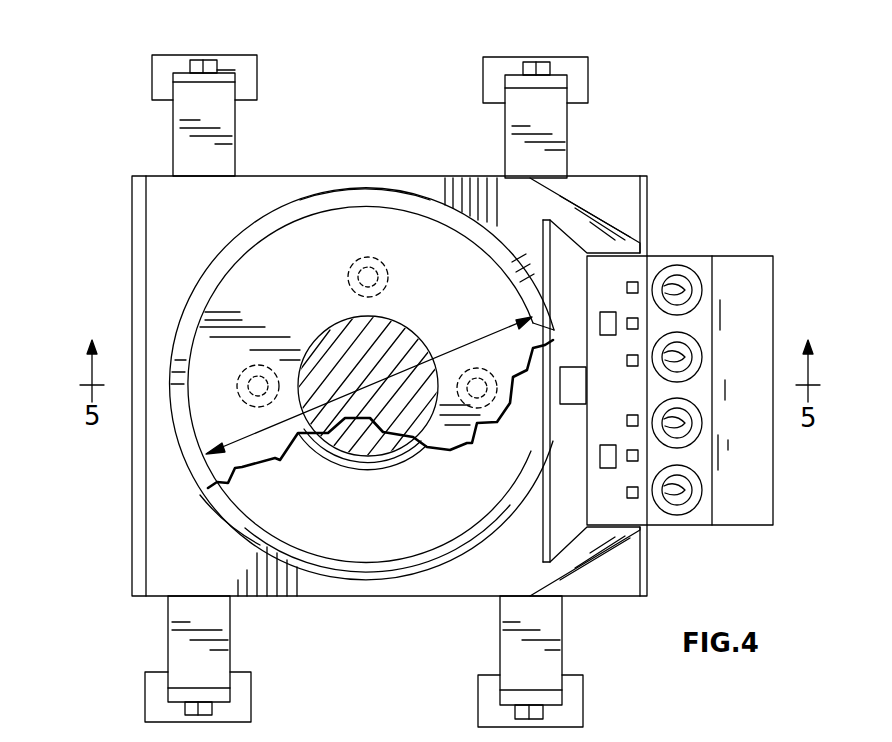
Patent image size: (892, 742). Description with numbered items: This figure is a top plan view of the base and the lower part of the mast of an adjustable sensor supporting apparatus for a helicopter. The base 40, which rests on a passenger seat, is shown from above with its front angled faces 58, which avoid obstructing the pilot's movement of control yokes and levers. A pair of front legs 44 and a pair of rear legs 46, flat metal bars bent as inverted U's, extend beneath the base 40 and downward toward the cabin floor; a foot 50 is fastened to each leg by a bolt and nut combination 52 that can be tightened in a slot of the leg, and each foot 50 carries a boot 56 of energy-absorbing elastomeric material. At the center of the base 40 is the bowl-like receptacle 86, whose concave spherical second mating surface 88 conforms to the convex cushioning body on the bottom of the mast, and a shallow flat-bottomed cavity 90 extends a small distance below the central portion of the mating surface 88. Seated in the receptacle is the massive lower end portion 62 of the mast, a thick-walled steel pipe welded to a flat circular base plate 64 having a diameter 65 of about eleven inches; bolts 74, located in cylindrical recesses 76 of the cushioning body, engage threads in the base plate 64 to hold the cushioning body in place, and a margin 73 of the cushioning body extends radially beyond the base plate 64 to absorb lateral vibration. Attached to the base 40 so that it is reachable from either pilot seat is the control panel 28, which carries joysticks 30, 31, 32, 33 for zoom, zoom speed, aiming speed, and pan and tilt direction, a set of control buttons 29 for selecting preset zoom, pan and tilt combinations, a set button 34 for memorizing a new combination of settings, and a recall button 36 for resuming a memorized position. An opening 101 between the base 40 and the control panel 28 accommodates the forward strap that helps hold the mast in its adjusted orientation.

The control panel 28 is at (740, 258).
The control buttons 29 is at (633, 285).
The joystick 30 is at (702, 290).
The joystick 31 is at (702, 357).
The joystick 32 is at (702, 423).
The joystick 33 is at (702, 490).
The set button 34 is at (600, 322).
The recall button 36 is at (600, 458).
The base 40 is at (152, 216).
The front legs 44 is at (505, 135).
The rear legs 46 is at (236, 130).
The foot 50 is at (232, 68).
The bolt and nut combination 52 is at (200, 58).
The boot 56 is at (258, 78).
The angled faces 58 is at (600, 205).
The lower end portion 62 is at (328, 335).
The base plate 64 is at (232, 292).
The diameter 65 is at (263, 450).
The margin 73 is at (415, 195).
The bolts 74 is at (350, 272).
The cylindrical recesses 76 is at (395, 278).
The receptacle 86 is at (437, 566).
The second mating surface 88 is at (250, 515).
The cavity 90 is at (361, 462).
The opening 101 is at (596, 388).